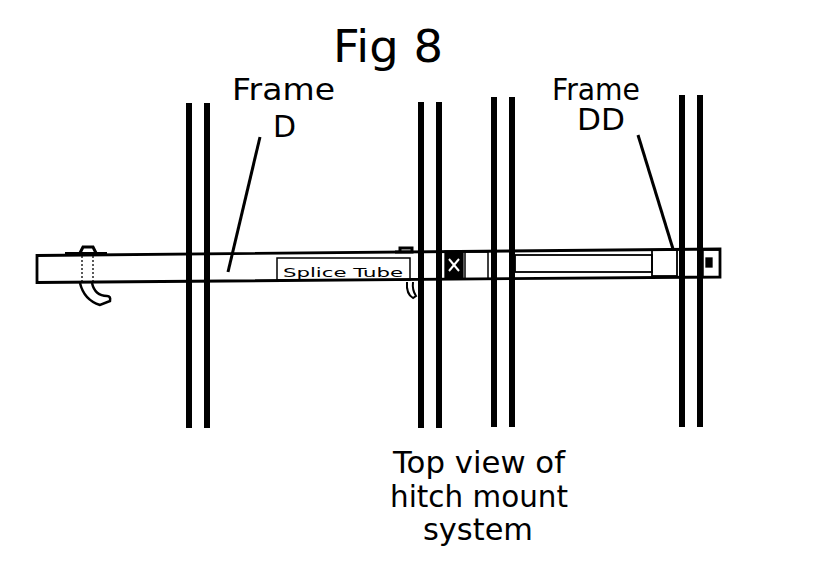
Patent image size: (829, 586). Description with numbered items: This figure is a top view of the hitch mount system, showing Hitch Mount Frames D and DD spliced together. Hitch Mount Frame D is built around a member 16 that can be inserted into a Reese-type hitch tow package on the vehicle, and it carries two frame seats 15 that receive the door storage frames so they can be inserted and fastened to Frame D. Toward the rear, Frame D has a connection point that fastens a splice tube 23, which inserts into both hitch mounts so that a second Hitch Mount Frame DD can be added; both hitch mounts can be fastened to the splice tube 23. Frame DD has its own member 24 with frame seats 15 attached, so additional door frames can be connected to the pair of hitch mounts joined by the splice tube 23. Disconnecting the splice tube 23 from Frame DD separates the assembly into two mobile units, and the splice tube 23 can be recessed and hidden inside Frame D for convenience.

The frame seat 15 is at (209, 402).
The hitch mount frame member 16 is at (130, 253).
The splice tube 23 is at (583, 265).
The hitch mount frame DD member 24 is at (672, 260).